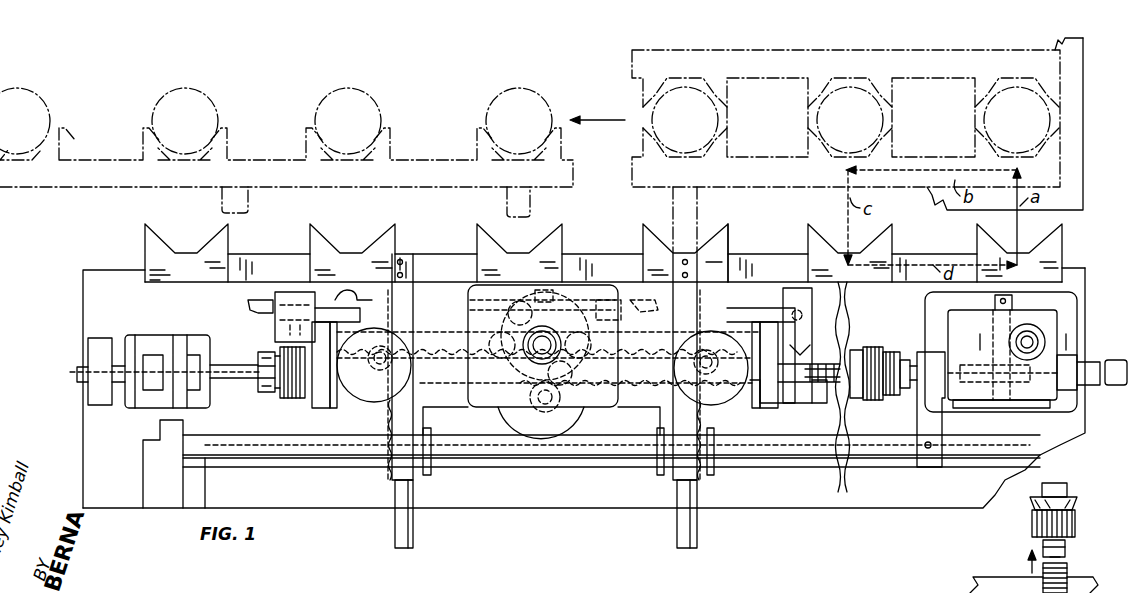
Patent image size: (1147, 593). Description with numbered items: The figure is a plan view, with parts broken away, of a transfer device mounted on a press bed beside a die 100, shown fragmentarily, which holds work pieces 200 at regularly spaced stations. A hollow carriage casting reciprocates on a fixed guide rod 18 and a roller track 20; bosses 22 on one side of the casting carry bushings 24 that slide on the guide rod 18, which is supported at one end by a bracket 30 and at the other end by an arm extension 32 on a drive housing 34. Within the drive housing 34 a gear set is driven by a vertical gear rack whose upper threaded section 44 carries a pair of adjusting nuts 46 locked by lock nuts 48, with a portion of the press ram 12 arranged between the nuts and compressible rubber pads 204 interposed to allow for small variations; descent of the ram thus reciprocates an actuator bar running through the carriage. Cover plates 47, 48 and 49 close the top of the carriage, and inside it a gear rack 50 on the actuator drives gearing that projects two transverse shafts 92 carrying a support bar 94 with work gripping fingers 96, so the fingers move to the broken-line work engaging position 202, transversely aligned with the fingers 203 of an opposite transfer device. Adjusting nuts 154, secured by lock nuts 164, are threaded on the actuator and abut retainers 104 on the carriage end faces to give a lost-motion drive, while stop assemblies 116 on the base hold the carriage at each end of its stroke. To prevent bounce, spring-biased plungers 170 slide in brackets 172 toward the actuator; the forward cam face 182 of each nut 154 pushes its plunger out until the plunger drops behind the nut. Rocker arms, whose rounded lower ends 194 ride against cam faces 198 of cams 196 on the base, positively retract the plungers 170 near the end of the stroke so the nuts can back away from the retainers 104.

The die 100 is at (1083, 194).
The work engaging position 202 is at (893, 146).
The work gripping fingers of the opposite transfer device 203 is at (724, 88).
The work pieces 200 is at (540, 100).
The roller track 20 is at (360, 295).
The work gripping fingers 96 is at (320, 236).
The support bar 94 is at (758, 252).
The stop assemblies 116 is at (148, 404).
The lock nut 164 is at (262, 388).
The adjusting nuts 154 is at (290, 398).
The forward cam face 182 is at (850, 392).
The retainers 104 is at (325, 408).
The cover plate 49 is at (362, 392).
The cover plate 47 is at (722, 392).
The gear rack 50 is at (622, 385).
The cover plate / lock nuts 48 is at (490, 395).
The adjusting nuts 46 is at (1076, 521).
The compressible rubber pads 204 is at (1033, 522).
The threaded section 44 is at (1070, 546).
The press ram portion 12 is at (1095, 578).
The bosses 22 is at (390, 470).
The shafts 92 is at (410, 530).
The bushings 24 is at (430, 428).
The guide rod 18 is at (778, 450).
The bracket 30 is at (148, 480).
The cam face 198 is at (262, 313).
The brackets 172 is at (285, 292).
The rounded lower end of rocker arm 194 is at (316, 300).
The plungers 170 is at (800, 346).
The cams 196 is at (258, 303).
The arm extension 32 is at (935, 422).
The drive housing 34 is at (1050, 318).